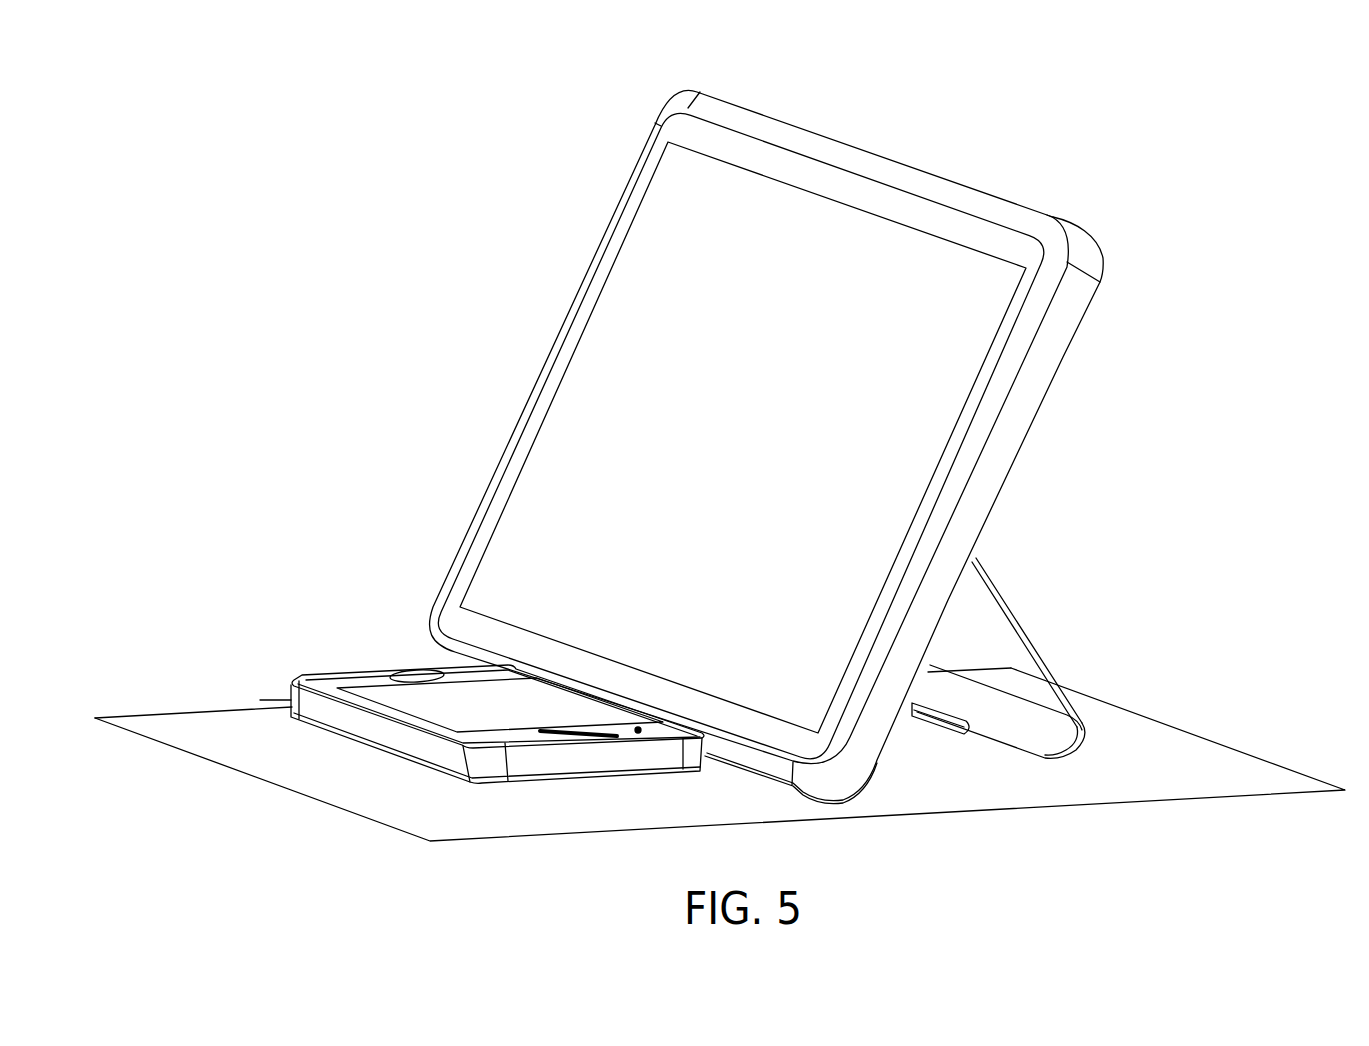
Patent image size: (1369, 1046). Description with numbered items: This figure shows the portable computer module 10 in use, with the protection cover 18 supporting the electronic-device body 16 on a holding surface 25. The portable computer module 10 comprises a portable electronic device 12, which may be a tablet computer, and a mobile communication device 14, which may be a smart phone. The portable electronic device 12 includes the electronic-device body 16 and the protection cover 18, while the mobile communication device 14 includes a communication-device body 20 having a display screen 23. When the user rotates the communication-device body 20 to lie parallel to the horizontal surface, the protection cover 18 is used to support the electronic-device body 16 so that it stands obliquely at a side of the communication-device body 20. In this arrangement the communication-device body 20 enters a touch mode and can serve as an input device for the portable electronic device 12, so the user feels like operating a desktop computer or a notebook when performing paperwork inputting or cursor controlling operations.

The portable computer module 10 is at (821, 441).
The portable electronic device 12 is at (1122, 420).
The mobile communication device 14 is at (288, 699).
The electronic-device body 16 is at (992, 470).
The protection cover 18 is at (995, 643).
The communication-device body 20 is at (497, 686).
The display screen 23 is at (413, 703).
The holding surface 25 is at (1200, 775).